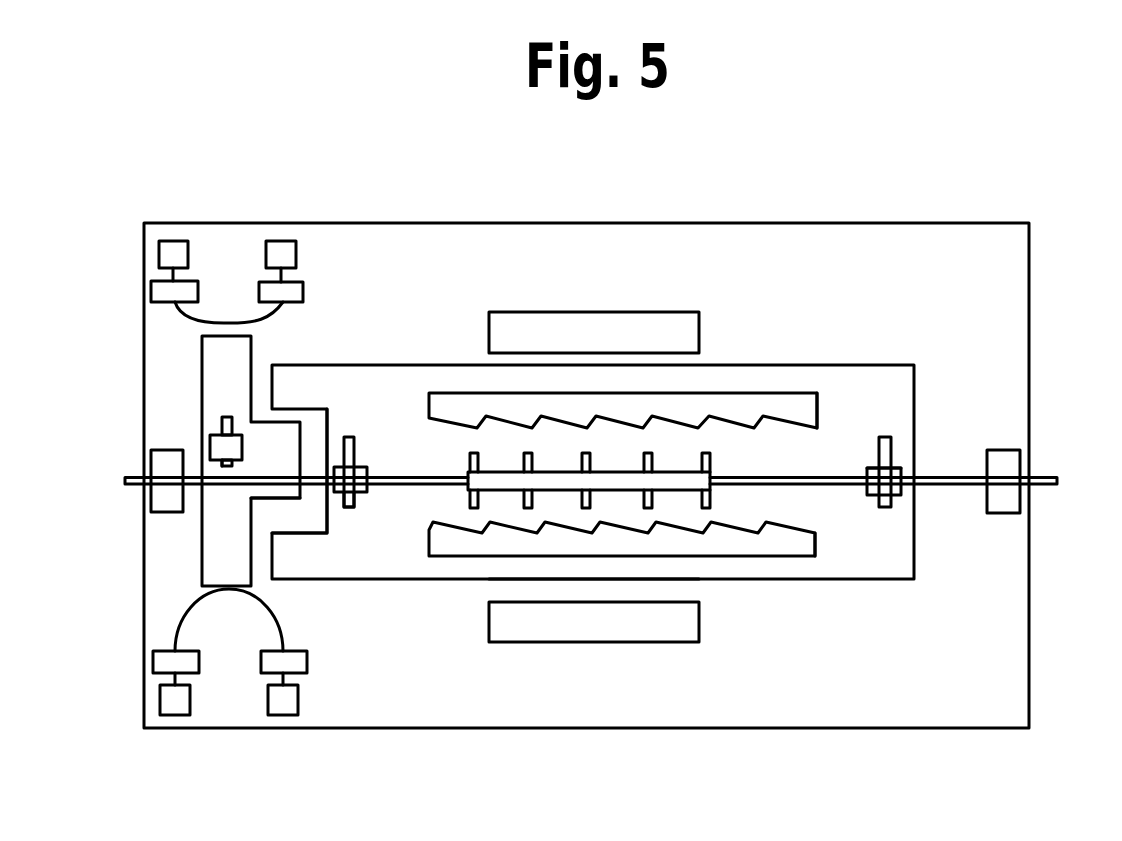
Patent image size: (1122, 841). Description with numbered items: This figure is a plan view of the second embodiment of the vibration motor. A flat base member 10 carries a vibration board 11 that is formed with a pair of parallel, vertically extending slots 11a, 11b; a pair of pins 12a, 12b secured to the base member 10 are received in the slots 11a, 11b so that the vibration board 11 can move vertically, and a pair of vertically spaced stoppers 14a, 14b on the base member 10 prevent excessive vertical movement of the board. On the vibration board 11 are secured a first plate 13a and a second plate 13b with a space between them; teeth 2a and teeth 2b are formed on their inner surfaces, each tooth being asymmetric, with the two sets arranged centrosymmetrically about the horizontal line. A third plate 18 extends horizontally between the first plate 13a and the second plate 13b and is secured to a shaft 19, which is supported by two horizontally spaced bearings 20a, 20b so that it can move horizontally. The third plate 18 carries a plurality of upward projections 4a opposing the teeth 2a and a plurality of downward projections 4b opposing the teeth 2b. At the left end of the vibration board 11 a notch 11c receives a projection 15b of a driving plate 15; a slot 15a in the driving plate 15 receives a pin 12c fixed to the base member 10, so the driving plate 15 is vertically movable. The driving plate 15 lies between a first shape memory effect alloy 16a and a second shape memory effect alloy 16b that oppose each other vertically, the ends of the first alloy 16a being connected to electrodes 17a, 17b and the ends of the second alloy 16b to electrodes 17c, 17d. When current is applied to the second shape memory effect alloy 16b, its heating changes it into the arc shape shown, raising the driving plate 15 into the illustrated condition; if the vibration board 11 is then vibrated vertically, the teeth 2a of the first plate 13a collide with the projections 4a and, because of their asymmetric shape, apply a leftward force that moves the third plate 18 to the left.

The base member 10 is at (557, 243).
The vibration board 11 is at (762, 372).
The slot 11a is at (355, 437).
The slot 11b is at (887, 505).
The notch 11c is at (327, 525).
The pin 12a is at (363, 497).
The pin 12b is at (898, 468).
The pin 12c is at (222, 455).
The first plate 13a is at (807, 403).
The second plate 13b is at (803, 548).
The stopper 14a is at (630, 315).
The stopper 14b is at (628, 633).
The driving plate 15 is at (237, 358).
The slot 15a is at (220, 418).
The projection 15b is at (283, 493).
The first shape memory effect alloy 16a is at (237, 320).
The second shape memory effect alloy 16b is at (180, 615).
The electrode 17a is at (173, 248).
The electrode 17b is at (290, 250).
The electrode 17c is at (177, 707).
The electrode 17d is at (282, 708).
The third plate 18 is at (594, 638).
The shaft 19 is at (408, 482).
The bearing 20a is at (163, 463).
The bearing 20b is at (1003, 458).
The teeth 2a is at (607, 420).
The teeth 2b is at (733, 522).
The upward projections 4a is at (653, 463).
The downward projections 4b is at (710, 497).